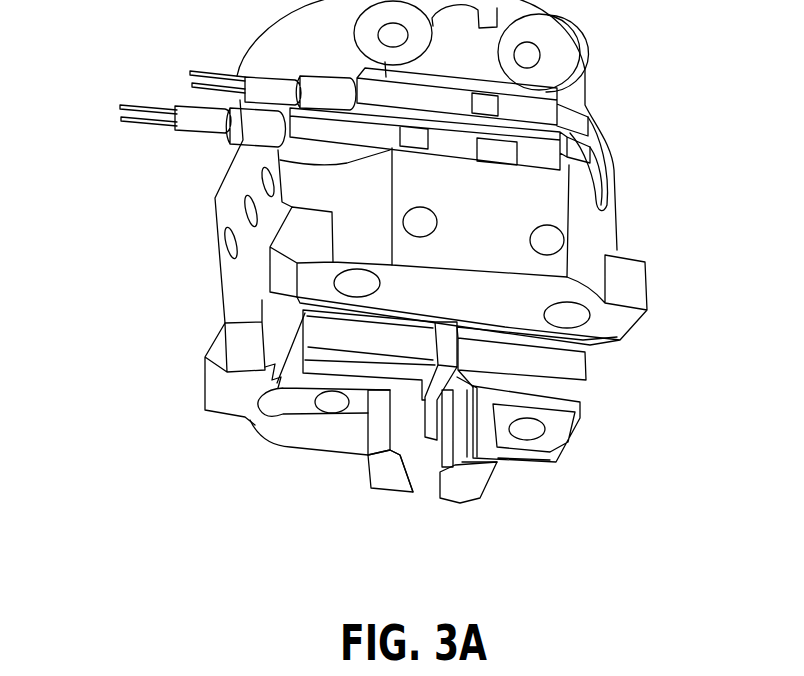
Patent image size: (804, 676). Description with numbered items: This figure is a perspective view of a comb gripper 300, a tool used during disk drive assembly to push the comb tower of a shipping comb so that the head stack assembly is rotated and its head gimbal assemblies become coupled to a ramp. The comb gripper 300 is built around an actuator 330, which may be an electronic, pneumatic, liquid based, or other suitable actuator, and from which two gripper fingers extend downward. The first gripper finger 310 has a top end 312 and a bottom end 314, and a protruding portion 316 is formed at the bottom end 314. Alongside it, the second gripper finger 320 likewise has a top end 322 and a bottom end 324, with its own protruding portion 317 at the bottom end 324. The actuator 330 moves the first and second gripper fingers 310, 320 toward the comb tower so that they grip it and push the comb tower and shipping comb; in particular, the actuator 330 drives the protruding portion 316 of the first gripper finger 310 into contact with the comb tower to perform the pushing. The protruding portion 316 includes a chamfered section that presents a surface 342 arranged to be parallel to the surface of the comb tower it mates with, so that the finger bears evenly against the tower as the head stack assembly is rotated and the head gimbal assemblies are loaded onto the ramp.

The comb gripper 300 is at (150, 255).
The actuator 330 is at (617, 205).
The first gripper finger 310 is at (503, 460).
The top end 312 is at (473, 386).
The bottom end 314 is at (483, 495).
The protruding portion 316 is at (430, 483).
The protruding portion 317 is at (400, 485).
The second gripper finger 320 is at (366, 460).
The top end 322 is at (364, 457).
The bottom end 324 is at (365, 490).
The surface 342 is at (467, 468).